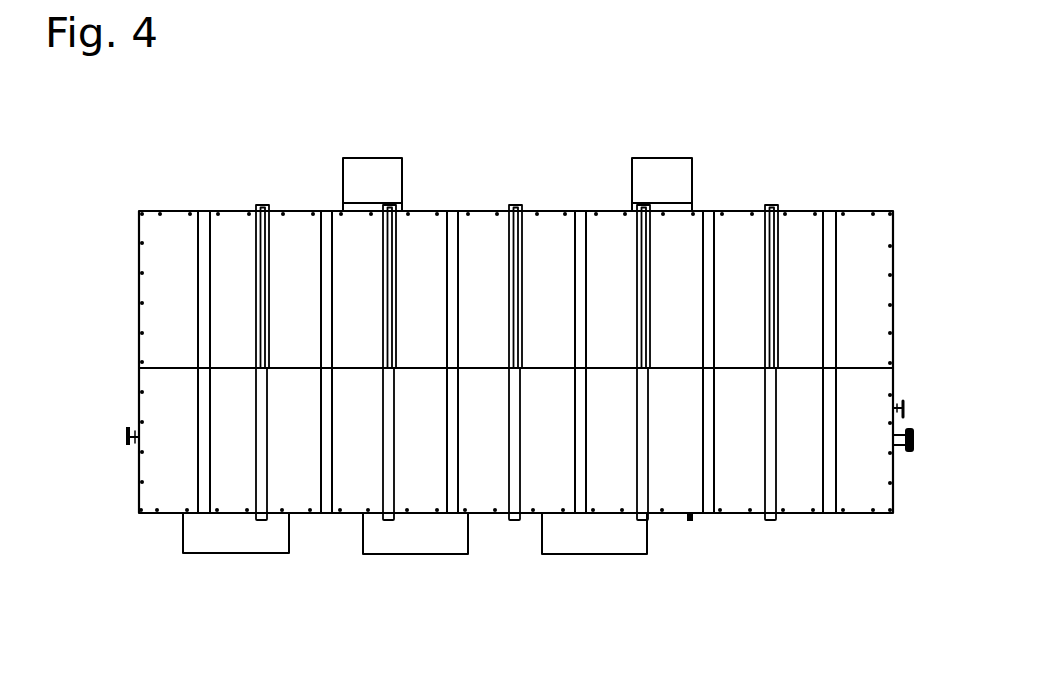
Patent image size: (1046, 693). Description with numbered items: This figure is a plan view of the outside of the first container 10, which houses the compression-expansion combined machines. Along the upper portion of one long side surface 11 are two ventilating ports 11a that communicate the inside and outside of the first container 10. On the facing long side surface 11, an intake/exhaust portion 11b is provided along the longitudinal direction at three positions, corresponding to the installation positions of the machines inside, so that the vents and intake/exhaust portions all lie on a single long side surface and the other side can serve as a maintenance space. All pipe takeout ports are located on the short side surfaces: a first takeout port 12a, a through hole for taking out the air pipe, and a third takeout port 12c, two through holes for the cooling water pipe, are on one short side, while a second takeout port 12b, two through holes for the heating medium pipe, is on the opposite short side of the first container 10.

The first container 10 is at (833, 188).
The long side surface 11 is at (722, 212).
The ventilating port 11a is at (637, 175).
The intake/exhaust portion 11b is at (573, 552).
The first takeout port 12a is at (897, 455).
The second takeout port 12b is at (135, 447).
The third takeout port 12c is at (893, 402).